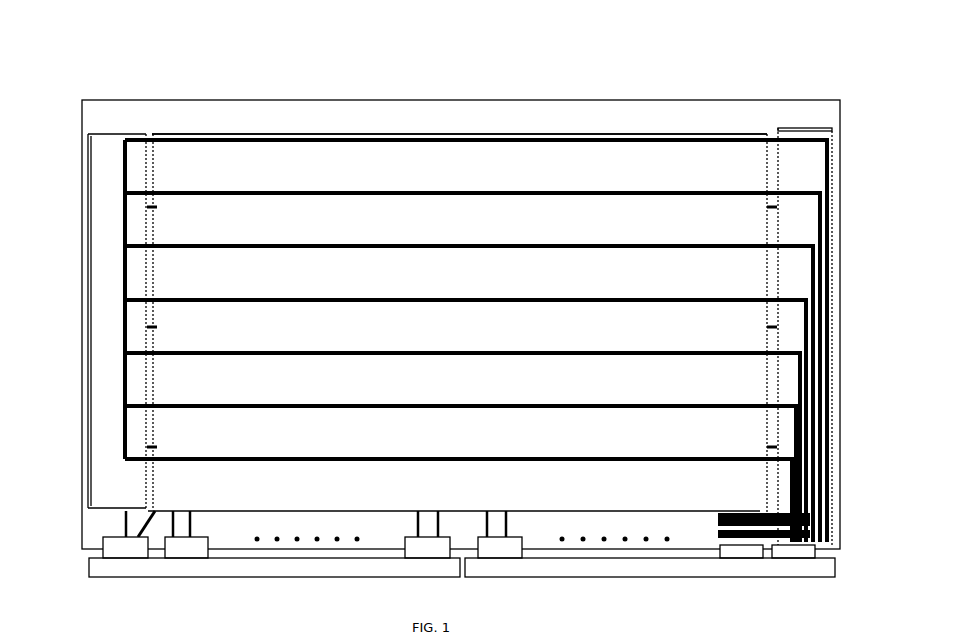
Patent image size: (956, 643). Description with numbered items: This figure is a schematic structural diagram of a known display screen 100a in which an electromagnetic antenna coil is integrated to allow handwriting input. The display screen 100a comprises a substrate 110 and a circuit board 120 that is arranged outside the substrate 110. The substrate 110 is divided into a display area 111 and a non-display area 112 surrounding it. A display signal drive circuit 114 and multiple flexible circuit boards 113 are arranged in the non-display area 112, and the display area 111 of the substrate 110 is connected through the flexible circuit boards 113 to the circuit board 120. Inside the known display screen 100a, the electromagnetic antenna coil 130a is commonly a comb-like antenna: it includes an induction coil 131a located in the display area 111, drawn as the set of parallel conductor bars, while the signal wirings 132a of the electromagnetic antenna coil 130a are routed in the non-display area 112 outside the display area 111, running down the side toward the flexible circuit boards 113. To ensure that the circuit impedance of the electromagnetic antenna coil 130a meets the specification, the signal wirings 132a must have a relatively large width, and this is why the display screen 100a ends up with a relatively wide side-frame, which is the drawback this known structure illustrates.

The display screen 100a is at (92, 92).
The substrate 110 is at (267, 58).
The display area 111 is at (227, 163).
The non-display area 112 is at (182, 117).
The flexible circuit boards 113 is at (815, 553).
The display signal drive circuit 114 is at (97, 275).
The circuit board 120 is at (90, 568).
The electromagnetic antenna coil 130a is at (897, 112).
The induction coil 131a is at (747, 133).
The signal wirings 132a is at (832, 158).